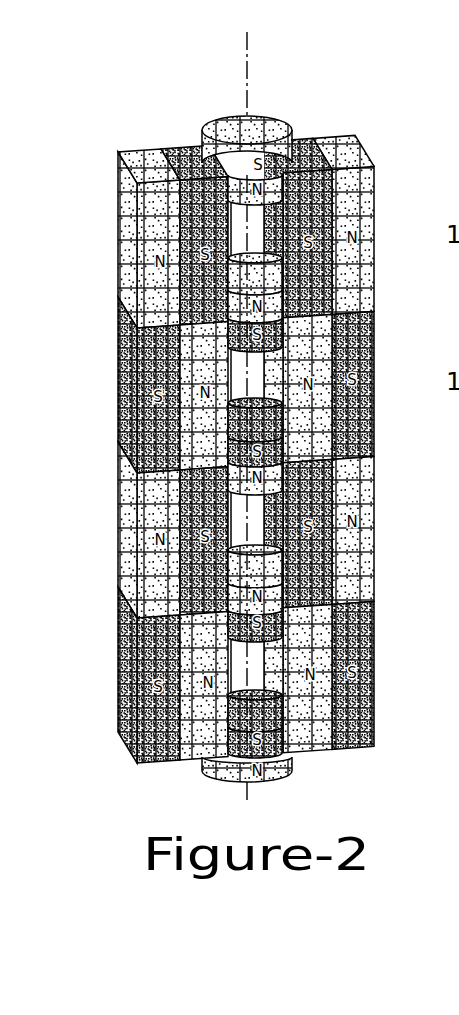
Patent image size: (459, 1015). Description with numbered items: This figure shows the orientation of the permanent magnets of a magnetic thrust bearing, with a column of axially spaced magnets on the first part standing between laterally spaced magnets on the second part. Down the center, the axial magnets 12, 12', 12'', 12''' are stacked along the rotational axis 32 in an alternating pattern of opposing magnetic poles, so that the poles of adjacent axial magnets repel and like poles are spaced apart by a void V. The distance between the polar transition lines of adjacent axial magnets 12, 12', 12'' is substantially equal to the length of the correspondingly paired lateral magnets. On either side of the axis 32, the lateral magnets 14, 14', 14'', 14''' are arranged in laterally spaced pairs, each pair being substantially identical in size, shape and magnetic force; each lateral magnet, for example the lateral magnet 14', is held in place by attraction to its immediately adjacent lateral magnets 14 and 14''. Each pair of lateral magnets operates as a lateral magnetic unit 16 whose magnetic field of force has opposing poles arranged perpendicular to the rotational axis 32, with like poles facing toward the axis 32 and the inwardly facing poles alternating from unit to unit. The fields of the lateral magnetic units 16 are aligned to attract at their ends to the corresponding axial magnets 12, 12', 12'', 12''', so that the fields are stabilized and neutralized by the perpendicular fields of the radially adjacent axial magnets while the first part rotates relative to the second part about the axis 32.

The axial magnet 12 is at (335, 738).
The axial magnet 12' is at (337, 593).
The axial magnet 12'' is at (339, 447).
The axial magnet 12''' is at (342, 302).
The lateral magnet 14 is at (209, 675).
The lateral magnet 14' is at (209, 530).
The lateral magnet 14'' is at (209, 385).
The lateral magnet 14''' is at (209, 231).
The lateral magnetic unit 16 is at (178, 158).
The rotational axis 32 is at (247, 50).
The void V is at (252, 518).